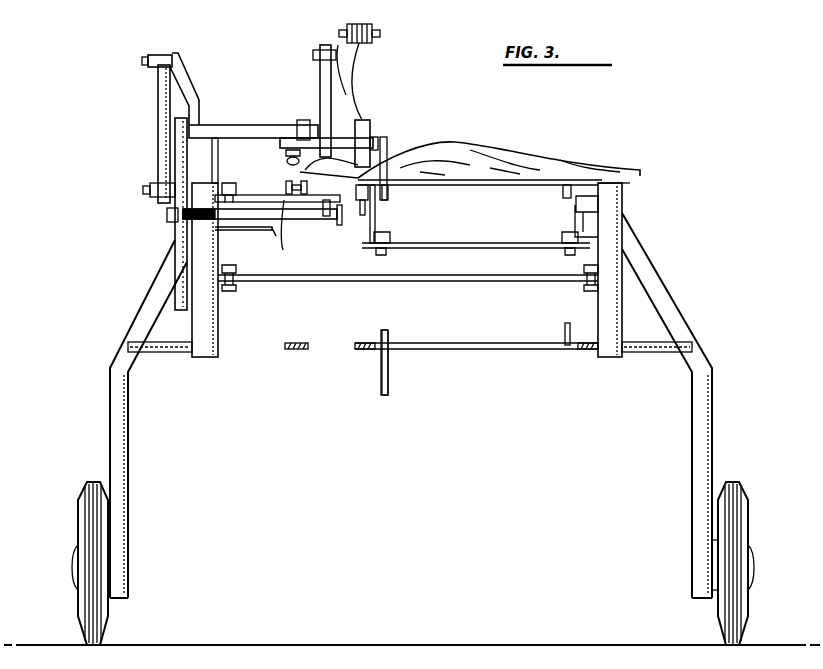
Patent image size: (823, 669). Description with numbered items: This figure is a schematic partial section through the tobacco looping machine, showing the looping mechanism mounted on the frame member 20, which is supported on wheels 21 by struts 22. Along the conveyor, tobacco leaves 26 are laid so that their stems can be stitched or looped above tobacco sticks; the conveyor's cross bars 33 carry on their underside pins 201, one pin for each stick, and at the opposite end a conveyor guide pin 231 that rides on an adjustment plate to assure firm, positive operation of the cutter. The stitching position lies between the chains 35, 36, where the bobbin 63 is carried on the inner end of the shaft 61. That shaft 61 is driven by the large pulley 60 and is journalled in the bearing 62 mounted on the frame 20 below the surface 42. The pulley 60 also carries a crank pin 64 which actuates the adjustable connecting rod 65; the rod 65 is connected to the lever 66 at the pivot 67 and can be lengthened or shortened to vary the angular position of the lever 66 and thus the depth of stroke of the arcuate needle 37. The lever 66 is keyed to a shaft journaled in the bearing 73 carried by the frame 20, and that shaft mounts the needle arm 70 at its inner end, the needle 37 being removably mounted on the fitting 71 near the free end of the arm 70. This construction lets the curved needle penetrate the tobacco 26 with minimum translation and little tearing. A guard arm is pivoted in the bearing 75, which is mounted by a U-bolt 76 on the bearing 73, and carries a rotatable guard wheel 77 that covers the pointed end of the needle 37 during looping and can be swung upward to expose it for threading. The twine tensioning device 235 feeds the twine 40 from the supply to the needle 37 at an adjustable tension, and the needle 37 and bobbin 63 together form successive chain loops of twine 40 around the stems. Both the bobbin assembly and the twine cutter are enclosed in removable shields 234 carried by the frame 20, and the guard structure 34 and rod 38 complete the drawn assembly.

The frame member 20 is at (208, 272).
The wheels 21 is at (88, 522).
The struts 22 is at (120, 444).
The tobacco leaves 26 is at (516, 158).
The cross bars 33 is at (467, 185).
The shelf end 34 is at (600, 188).
The chain 35 is at (360, 342).
The chain 36 is at (286, 188).
The arcuate needle 37 is at (338, 45).
The rod 38 is at (386, 145).
The twine 40 is at (353, 82).
The surface 42 is at (272, 233).
The large pulley 60 is at (178, 278).
The shaft 61 is at (168, 215).
The bearing 62 is at (284, 218).
The bobbin 63 is at (340, 228).
The crank pin 64 is at (151, 192).
The adjustable connecting rod 65 is at (159, 128).
The lever 66 is at (191, 97).
The pivot 67 is at (144, 61).
The needle arm 70 is at (322, 81).
The needle mount 71 is at (314, 55).
The bearing 73 is at (248, 126).
The bearing 75 is at (282, 146).
The U-bolt 76 is at (299, 122).
The guard wheel 77 is at (368, 125).
The pins 201 is at (388, 192).
The conveyor guide pin 231 is at (562, 190).
The shields 234 is at (440, 247).
The twine tensioning device 235 is at (380, 34).